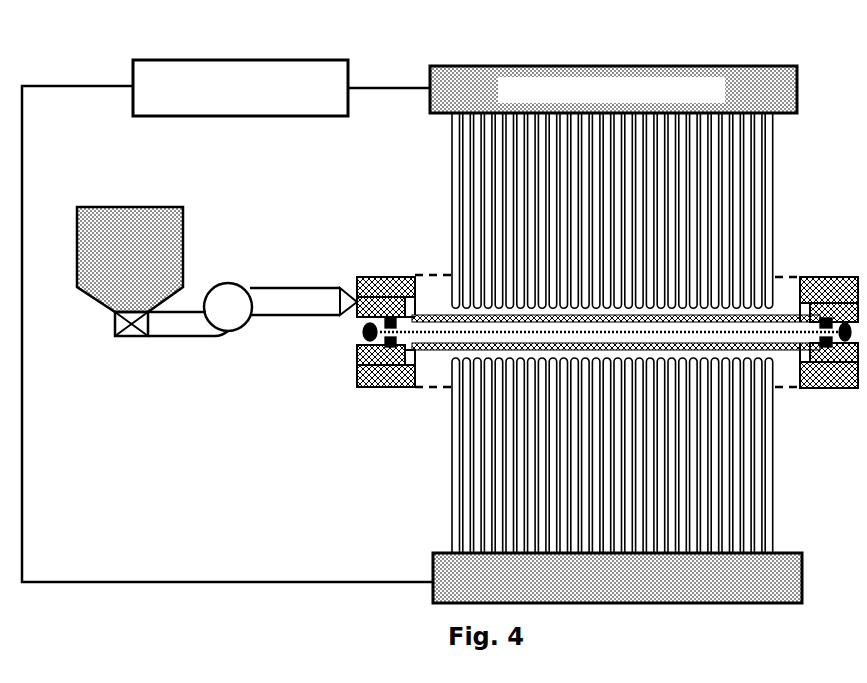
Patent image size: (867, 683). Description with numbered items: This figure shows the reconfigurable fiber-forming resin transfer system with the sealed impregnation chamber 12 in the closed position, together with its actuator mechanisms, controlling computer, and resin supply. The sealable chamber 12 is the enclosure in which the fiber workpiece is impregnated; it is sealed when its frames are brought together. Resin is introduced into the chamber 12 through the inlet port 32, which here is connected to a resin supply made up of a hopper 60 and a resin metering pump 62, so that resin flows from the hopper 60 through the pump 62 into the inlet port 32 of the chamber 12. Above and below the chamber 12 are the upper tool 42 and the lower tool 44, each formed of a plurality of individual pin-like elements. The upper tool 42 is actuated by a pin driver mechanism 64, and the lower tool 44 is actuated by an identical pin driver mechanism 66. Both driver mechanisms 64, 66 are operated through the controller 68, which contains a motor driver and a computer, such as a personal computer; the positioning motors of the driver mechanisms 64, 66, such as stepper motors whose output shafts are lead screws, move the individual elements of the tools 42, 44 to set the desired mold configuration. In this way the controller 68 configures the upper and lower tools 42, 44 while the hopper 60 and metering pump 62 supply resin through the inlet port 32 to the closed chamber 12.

The sealable chamber 12 is at (793, 260).
The inlet port 32 is at (378, 277).
The upper tool 42 is at (768, 215).
The lower tool 44 is at (776, 488).
The hopper 60 is at (77, 238).
The resin metering pump 62 is at (228, 283).
The pin driver mechanism 64 is at (632, 66).
The pin driver mechanism 66 is at (803, 560).
The controller 68 is at (213, 60).